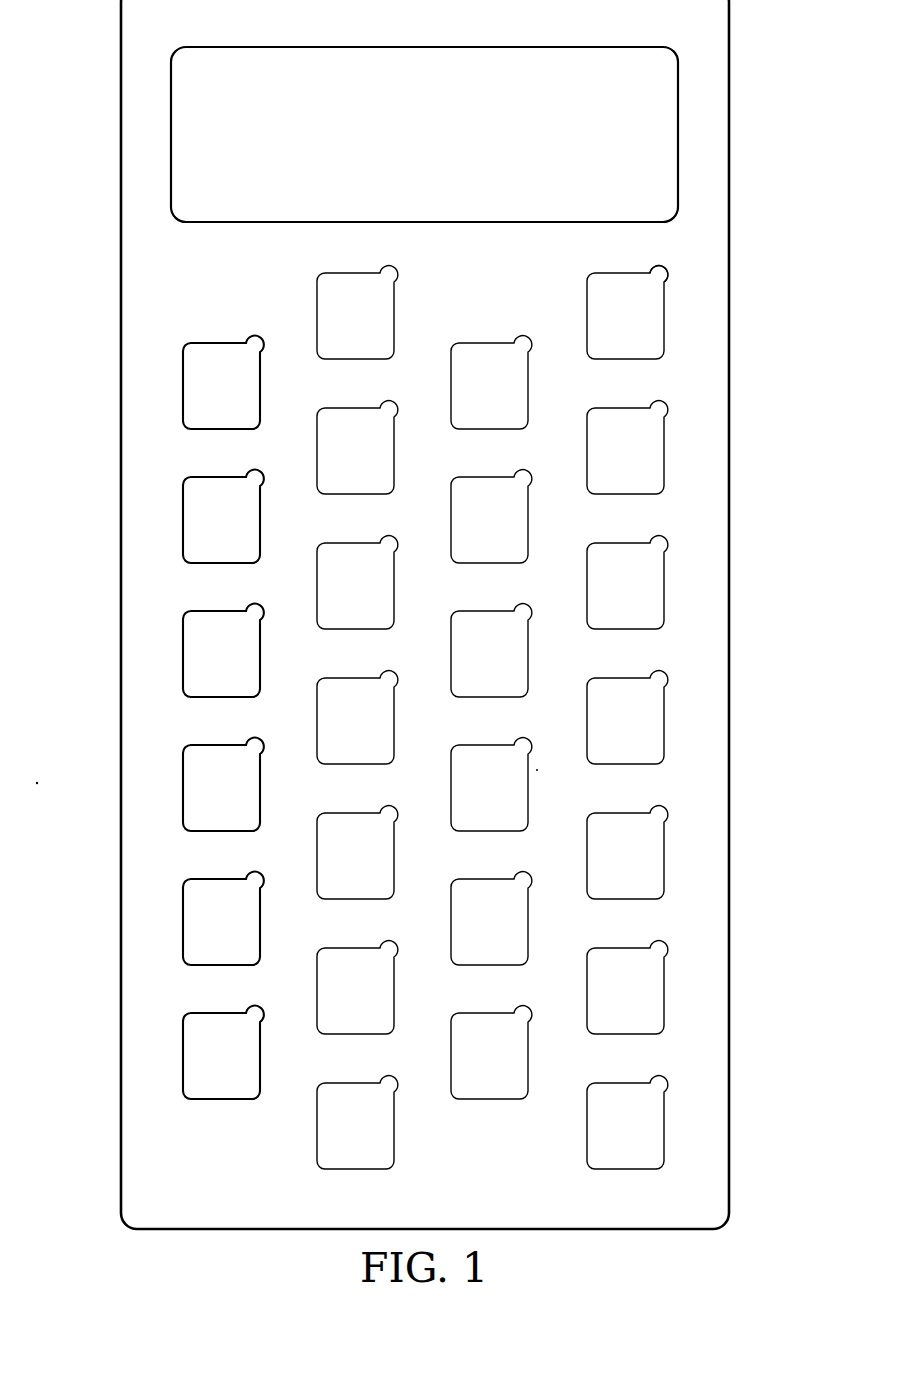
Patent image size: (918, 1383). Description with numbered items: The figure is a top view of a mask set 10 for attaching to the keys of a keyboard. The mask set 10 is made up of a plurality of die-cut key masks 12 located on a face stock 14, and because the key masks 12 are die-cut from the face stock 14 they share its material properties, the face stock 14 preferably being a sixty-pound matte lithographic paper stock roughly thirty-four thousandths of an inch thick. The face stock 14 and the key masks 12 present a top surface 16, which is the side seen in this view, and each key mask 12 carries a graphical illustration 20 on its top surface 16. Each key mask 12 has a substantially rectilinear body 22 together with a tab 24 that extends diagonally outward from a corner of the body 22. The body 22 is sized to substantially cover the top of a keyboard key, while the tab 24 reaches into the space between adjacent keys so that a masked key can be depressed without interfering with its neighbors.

The mask set 10 is at (62, 80).
The key mask 12 is at (176, 402).
The face stock 14 is at (548, 268).
The top surface 16 is at (180, 273).
The graphical illustration 20 is at (207, 812).
The body 22 is at (681, 304).
The tab 24 is at (665, 277).